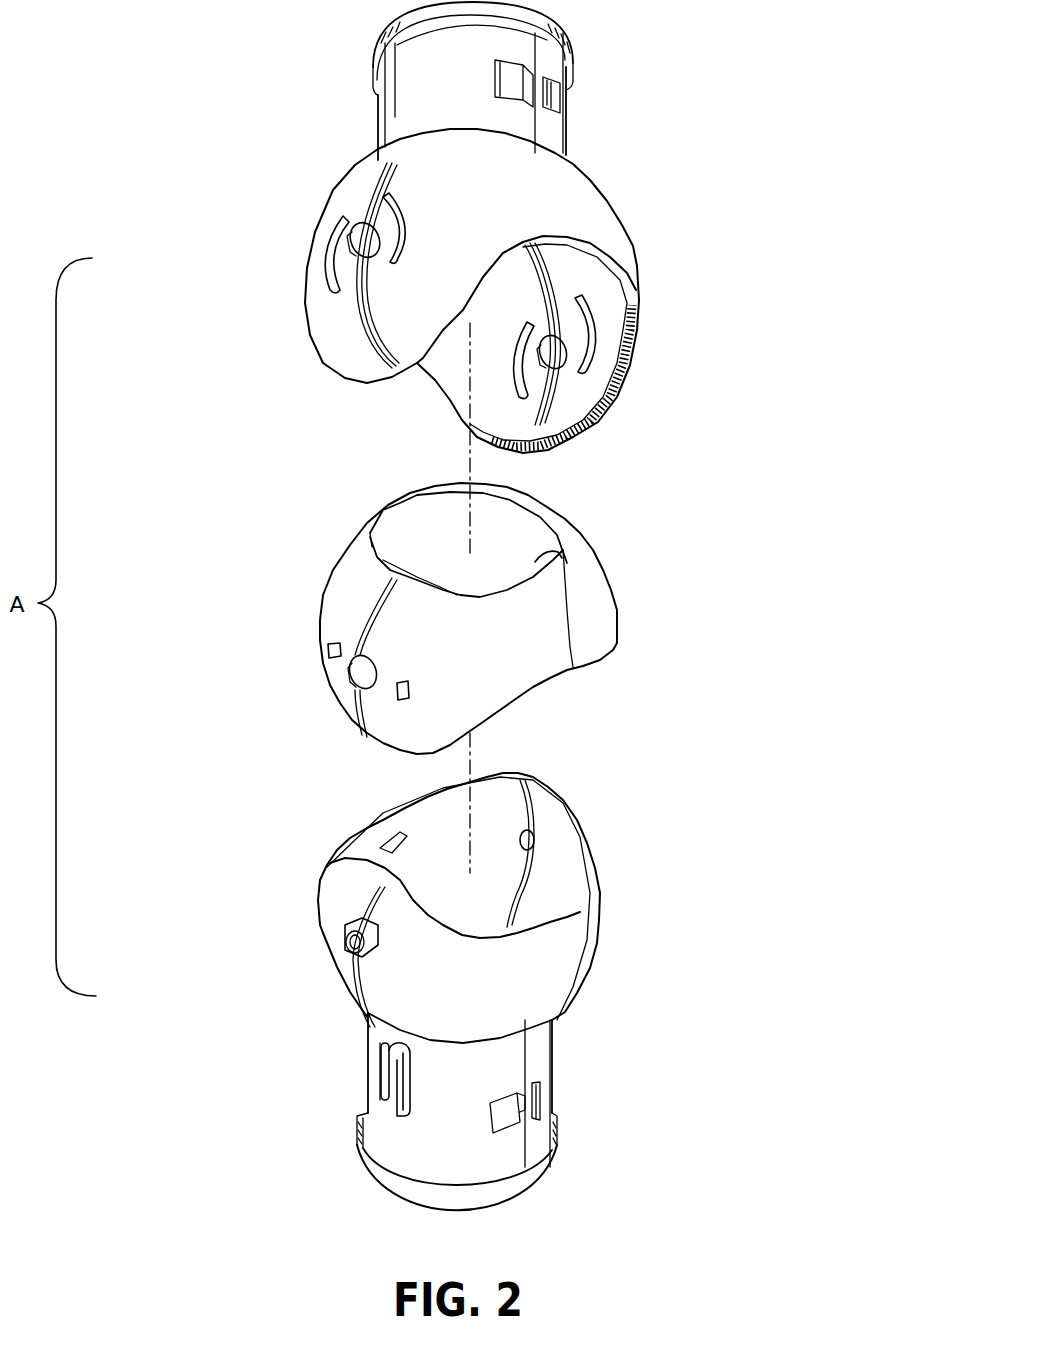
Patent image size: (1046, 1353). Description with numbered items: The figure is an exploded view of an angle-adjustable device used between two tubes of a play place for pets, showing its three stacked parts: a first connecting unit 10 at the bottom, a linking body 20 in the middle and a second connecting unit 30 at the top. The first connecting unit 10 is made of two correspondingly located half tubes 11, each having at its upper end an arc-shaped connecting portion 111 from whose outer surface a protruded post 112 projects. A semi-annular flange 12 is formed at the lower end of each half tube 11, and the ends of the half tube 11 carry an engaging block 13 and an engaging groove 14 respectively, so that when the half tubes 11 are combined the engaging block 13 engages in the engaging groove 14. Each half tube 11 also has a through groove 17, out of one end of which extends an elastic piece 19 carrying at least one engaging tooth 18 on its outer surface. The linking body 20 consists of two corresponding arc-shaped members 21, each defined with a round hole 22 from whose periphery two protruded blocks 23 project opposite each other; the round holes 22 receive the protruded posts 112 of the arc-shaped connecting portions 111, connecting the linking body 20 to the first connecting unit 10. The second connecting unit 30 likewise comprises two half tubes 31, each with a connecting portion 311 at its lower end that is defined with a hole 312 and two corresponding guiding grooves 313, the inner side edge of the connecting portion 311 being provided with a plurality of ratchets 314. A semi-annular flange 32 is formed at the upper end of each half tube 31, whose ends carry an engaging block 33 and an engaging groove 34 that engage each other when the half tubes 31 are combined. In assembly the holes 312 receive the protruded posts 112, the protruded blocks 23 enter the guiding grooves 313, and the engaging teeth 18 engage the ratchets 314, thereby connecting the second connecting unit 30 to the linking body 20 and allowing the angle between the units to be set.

The first connecting unit 10 is at (511, 1004).
The half tube 11 is at (537, 1062).
The semi-annular flange 12 is at (540, 1180).
The engaging block 13 is at (553, 1105).
The engaging groove 14 is at (533, 1085).
The through groove 17 is at (397, 1110).
The engaging tooth 18 is at (393, 1060).
The elastic piece 19 is at (393, 1080).
The linking body 20 is at (493, 644).
The arc-shaped member 21 is at (350, 582).
The round hole 22 is at (547, 560).
The protruded block 23 is at (323, 655).
The second connecting unit 30 is at (531, 231).
The half tube 31 is at (413, 62).
The semi-annular flange 32 is at (372, 68).
The engaging block 33 is at (553, 82).
The engaging groove 34 is at (553, 107).
The arc-shaped connecting portion 111 is at (577, 830).
The protruded post 112 is at (347, 928).
The connecting portion 311 is at (607, 220).
The hole 312 is at (355, 255).
The guiding groove 313 is at (388, 197).
The ratchets 314 is at (600, 403).